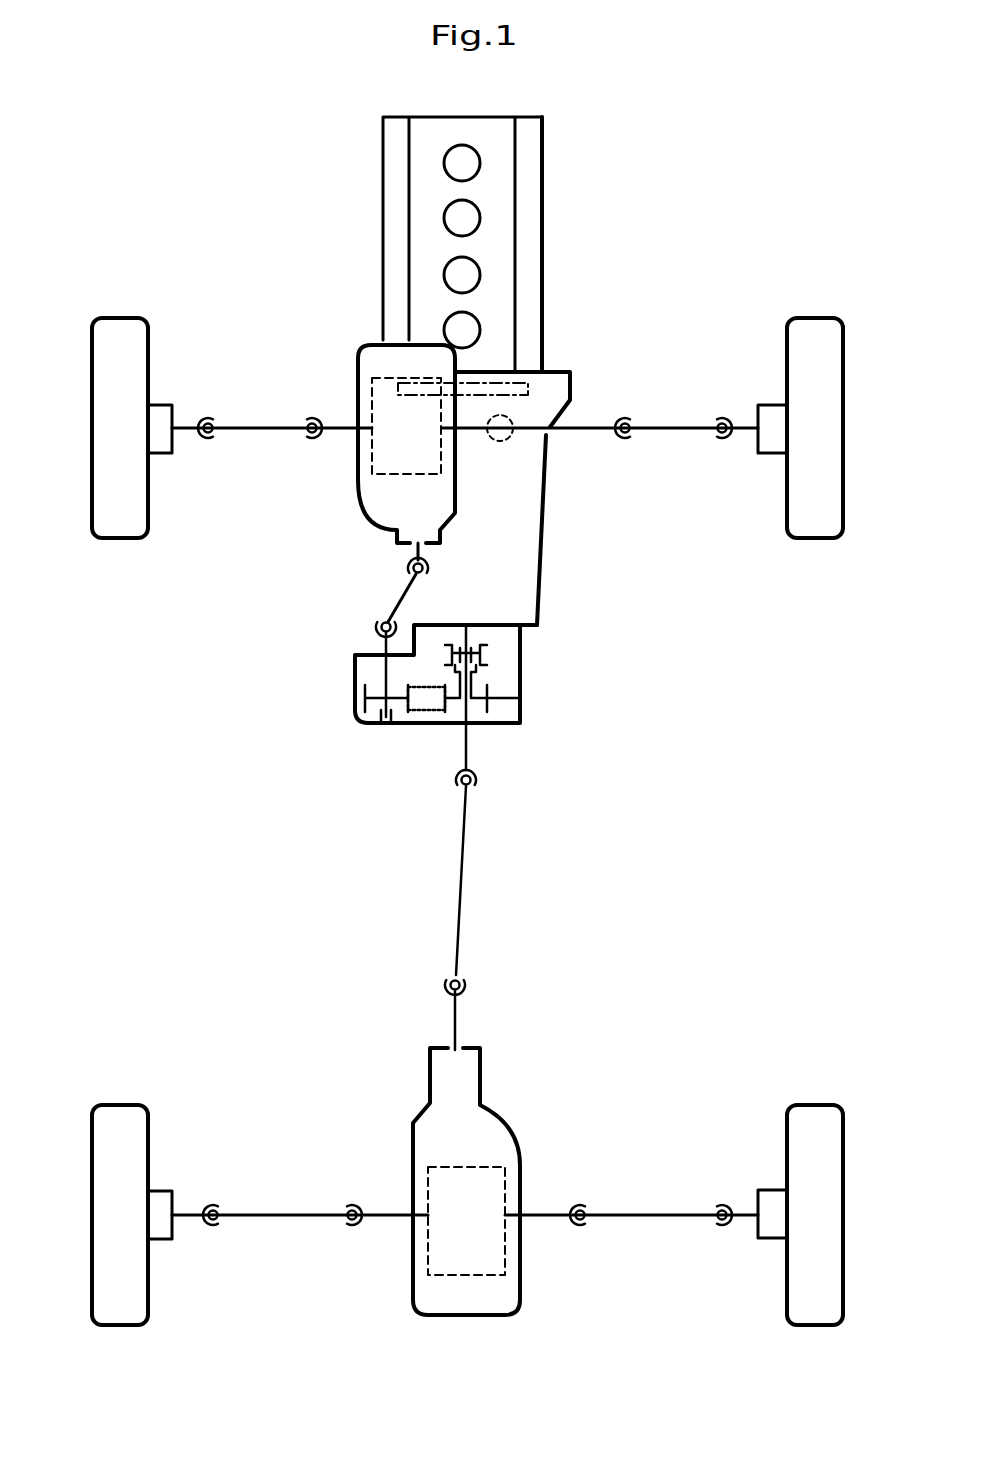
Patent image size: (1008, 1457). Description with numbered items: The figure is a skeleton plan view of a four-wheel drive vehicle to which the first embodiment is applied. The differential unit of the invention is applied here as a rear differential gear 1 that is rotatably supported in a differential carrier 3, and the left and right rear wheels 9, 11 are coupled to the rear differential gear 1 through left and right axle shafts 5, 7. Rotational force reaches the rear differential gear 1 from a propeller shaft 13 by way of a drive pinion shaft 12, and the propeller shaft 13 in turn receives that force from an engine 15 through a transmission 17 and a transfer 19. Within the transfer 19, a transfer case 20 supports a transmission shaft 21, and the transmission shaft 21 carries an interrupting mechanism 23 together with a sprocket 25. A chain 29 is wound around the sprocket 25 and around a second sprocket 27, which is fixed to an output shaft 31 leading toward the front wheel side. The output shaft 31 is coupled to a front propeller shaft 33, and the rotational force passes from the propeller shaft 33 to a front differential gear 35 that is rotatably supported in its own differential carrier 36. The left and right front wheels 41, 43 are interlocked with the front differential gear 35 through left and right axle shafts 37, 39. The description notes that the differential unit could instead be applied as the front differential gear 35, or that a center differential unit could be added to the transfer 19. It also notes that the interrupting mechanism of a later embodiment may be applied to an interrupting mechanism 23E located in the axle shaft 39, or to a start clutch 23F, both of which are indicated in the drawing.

The rear differential gear 1 is at (494, 1165).
The differential carrier 3 is at (492, 1093).
The left axle shaft 5 is at (274, 1206).
The right axle shaft 7 is at (649, 1206).
The left rear wheel 9 is at (120, 1105).
The right rear wheel 11 is at (820, 1105).
The drive pinion shaft 12 is at (455, 1013).
The propeller shaft 13 is at (463, 838).
The engine 15 is at (543, 215).
The transmission 17 is at (543, 505).
The transfer 19 is at (533, 688).
The transfer case 20 is at (373, 727).
The transmission shaft 21 is at (468, 742).
The interrupting mechanism 23 is at (500, 660).
The interrupting mechanism 23E is at (508, 440).
The start clutch 23F is at (528, 386).
The sprocket 25 is at (487, 690).
The sprocket 27 is at (362, 690).
The chain 29 is at (426, 725).
The output shaft 31 is at (380, 670).
The propeller shaft 33 is at (396, 588).
The front differential gear 35 is at (372, 478).
The differential carrier 36 is at (357, 365).
The left axle shaft 37 is at (259, 419).
The right axle shaft 39 is at (672, 419).
The left front wheel 41 is at (120, 318).
The right front wheel 43 is at (820, 318).